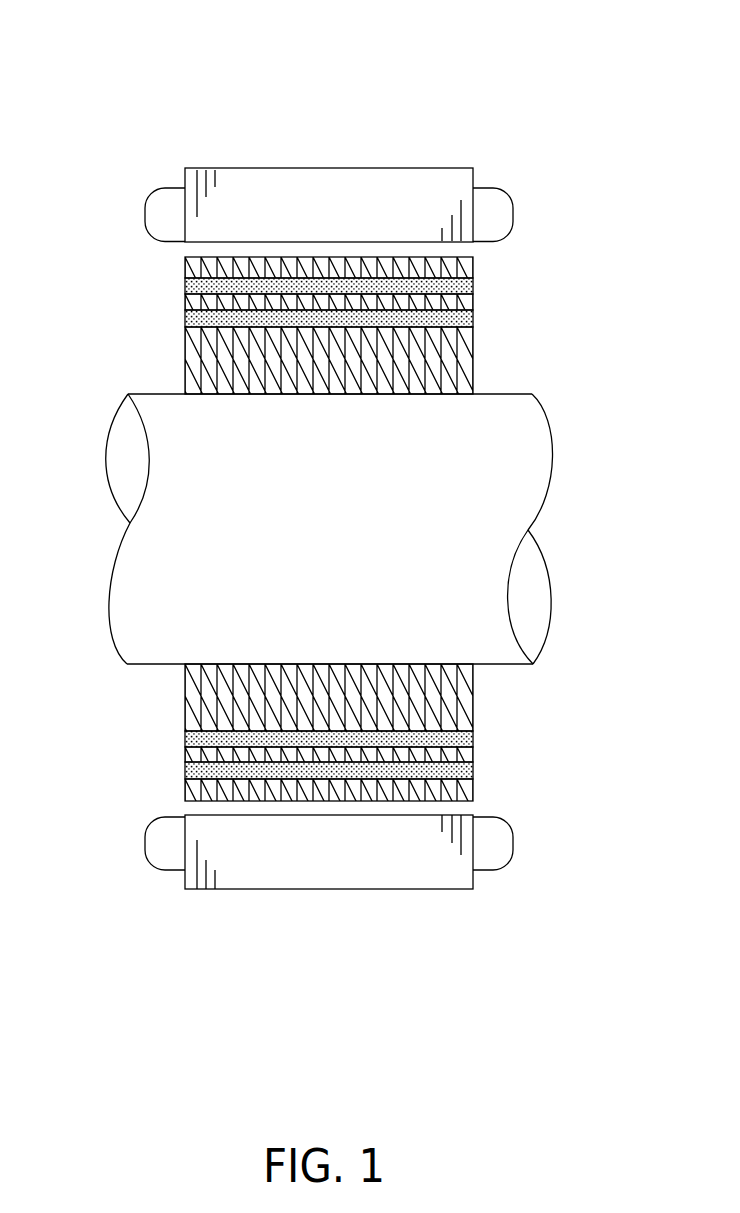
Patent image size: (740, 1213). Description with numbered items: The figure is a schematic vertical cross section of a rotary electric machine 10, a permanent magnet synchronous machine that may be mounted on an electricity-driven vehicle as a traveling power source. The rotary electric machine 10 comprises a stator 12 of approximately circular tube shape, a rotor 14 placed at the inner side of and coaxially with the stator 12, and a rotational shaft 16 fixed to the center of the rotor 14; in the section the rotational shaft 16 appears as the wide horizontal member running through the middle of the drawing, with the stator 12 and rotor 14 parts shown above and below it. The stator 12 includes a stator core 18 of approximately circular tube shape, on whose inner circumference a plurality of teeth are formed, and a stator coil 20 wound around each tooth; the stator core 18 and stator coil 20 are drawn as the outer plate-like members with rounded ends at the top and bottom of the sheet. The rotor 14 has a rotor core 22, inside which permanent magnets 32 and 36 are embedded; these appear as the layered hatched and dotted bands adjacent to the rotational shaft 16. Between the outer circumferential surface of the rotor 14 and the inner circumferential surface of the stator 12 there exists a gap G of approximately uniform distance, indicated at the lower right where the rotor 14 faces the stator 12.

The rotary electric machine 10 is at (350, 99).
The stator 12 is at (371, 912).
The rotor 14 is at (143, 345).
The rotational shaft 16 is at (500, 420).
The stator core 18 is at (260, 875).
The stator coil 20 is at (502, 843).
The rotor core 22 is at (462, 705).
The permanent magnet 32 is at (185, 770).
The permanent magnet 36 is at (185, 735).
The gap G is at (465, 808).